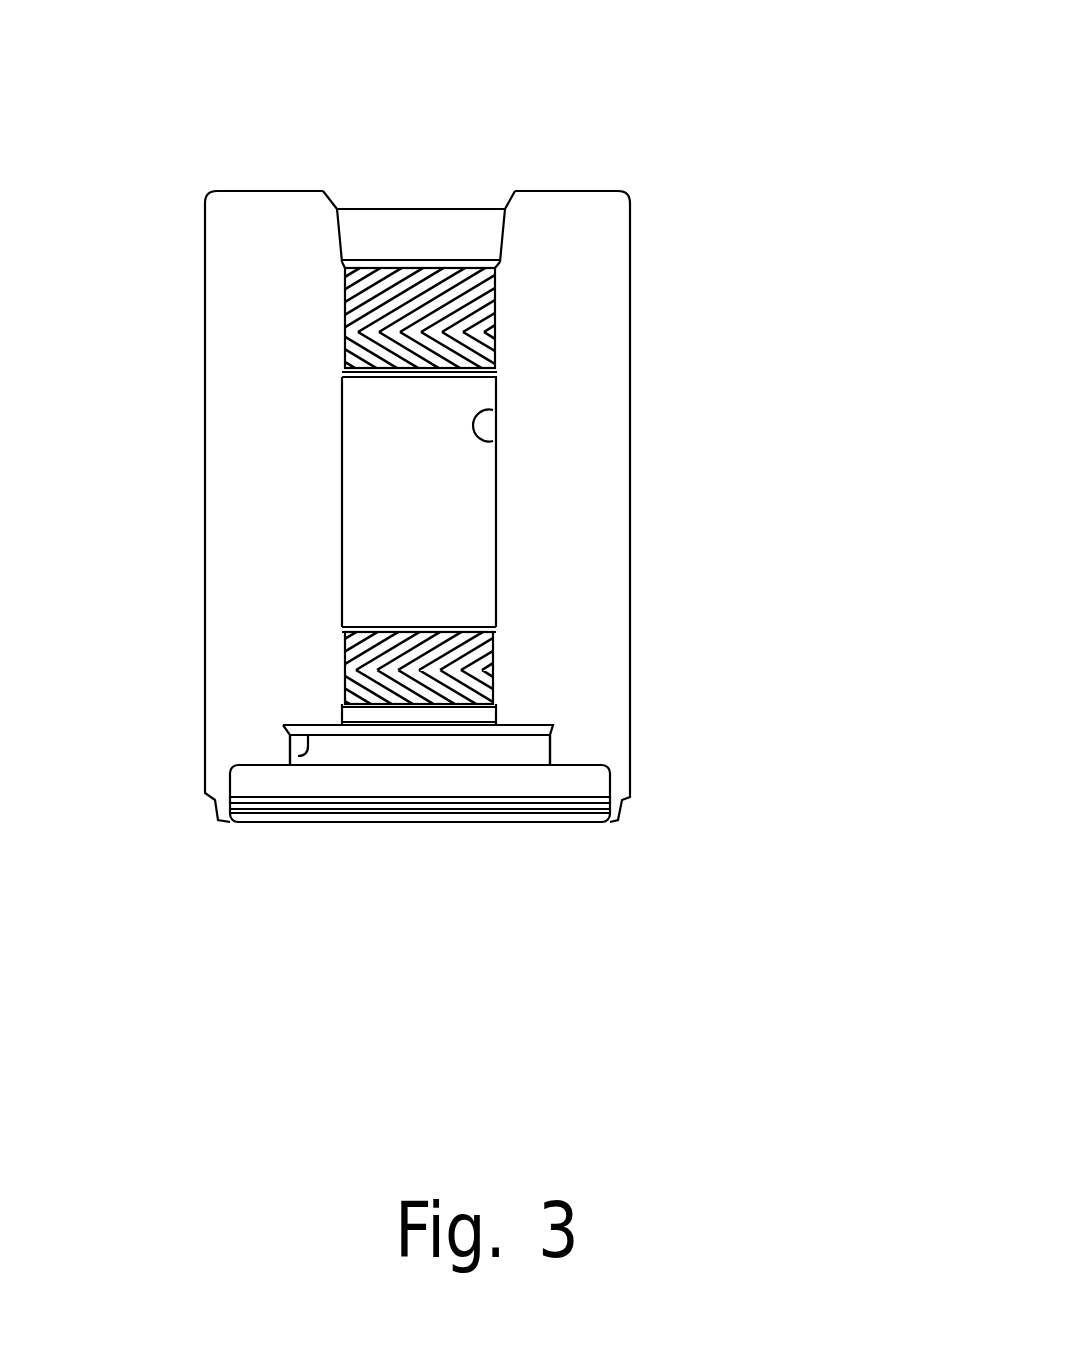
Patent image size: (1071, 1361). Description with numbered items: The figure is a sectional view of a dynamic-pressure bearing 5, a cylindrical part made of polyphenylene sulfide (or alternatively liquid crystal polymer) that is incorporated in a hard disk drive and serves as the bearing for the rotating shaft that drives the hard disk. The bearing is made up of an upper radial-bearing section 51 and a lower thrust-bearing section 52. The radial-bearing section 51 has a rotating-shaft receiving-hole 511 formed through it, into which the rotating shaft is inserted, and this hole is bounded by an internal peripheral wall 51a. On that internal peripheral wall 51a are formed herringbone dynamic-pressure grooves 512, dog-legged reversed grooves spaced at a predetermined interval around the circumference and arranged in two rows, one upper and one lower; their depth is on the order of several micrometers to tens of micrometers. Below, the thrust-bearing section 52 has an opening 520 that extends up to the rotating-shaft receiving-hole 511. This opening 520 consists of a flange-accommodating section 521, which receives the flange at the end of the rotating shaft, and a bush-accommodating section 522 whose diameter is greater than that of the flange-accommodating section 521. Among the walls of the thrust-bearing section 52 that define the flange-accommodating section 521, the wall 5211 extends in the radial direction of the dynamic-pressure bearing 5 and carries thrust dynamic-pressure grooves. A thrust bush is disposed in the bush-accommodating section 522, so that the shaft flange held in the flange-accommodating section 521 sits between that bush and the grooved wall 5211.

The dynamic-pressure bearing 5 is at (690, 94).
The radial-bearing section 51 is at (510, 512).
The rotating-shaft receiving-hole 511 is at (452, 175).
The herringbone dynamic-pressure grooves 512 is at (345, 323).
The internal peripheral wall 51a is at (493, 442).
The thrust-bearing section 52 is at (530, 715).
The flange-accommodating section 521 is at (537, 753).
The wall 5211 is at (298, 756).
The bush-accommodating section 522 is at (588, 785).
The opening 520 is at (470, 828).